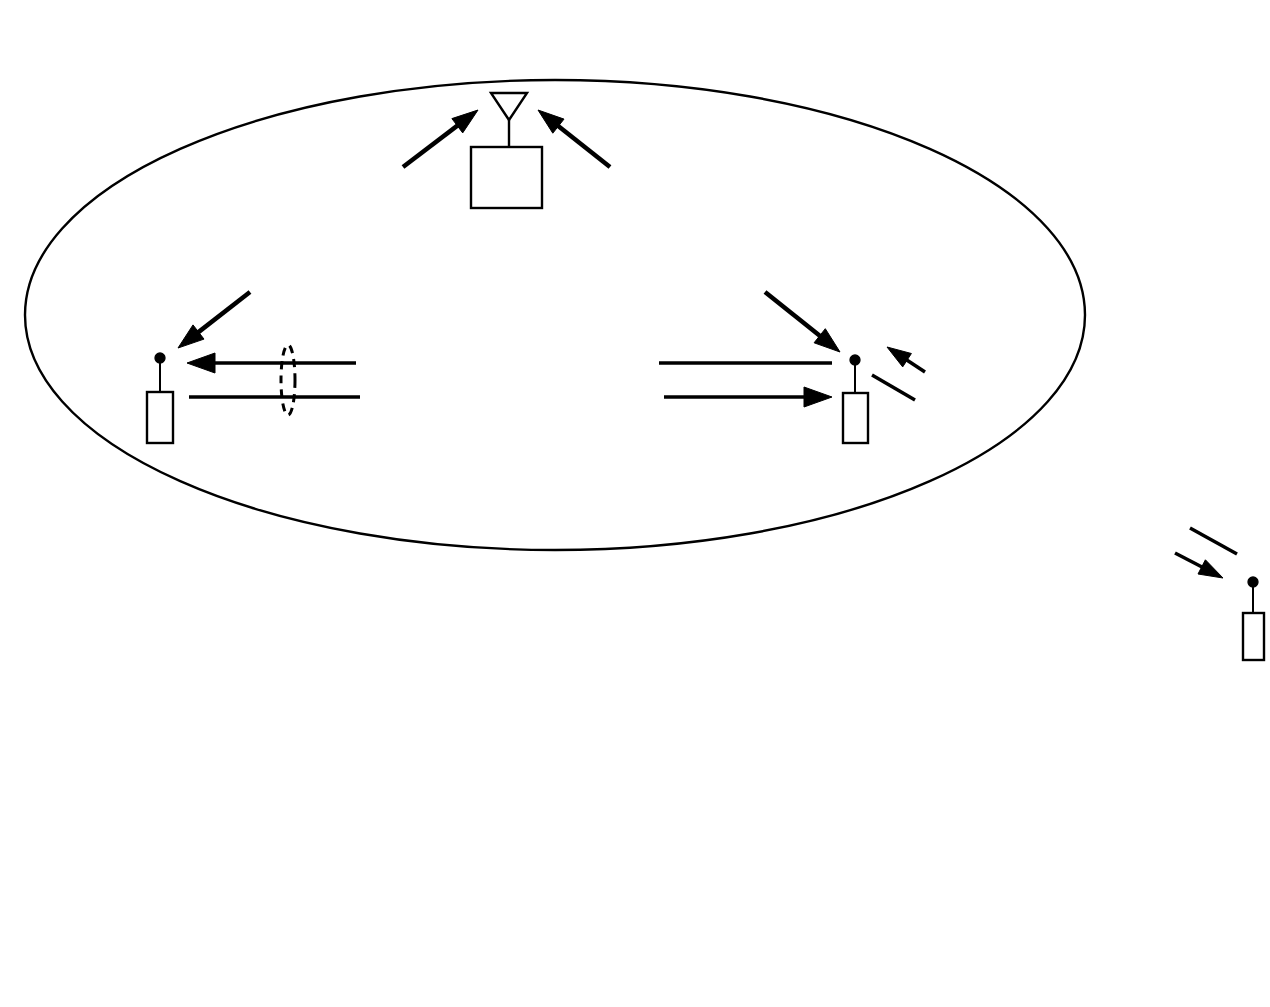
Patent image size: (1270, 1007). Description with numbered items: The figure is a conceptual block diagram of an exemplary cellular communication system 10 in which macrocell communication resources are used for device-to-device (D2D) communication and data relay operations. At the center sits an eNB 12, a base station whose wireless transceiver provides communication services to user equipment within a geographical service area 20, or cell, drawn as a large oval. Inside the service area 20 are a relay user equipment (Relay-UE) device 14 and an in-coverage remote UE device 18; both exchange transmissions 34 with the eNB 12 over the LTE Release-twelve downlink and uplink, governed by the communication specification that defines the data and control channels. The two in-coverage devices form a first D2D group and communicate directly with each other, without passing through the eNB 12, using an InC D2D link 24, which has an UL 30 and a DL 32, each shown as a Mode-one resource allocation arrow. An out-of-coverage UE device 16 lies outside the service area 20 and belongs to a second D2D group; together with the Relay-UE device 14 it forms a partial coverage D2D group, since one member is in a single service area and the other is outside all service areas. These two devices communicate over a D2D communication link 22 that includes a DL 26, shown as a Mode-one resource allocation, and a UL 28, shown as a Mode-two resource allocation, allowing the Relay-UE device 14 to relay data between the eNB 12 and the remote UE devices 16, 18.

The cellular communication system 10 is at (234, 88).
The eNB 12 is at (509, 208).
The relay user equipment (Relay-UE) device 14 is at (843, 443).
The out-of-coverage (OoC) UE device 16 is at (1243, 635).
The in-coverage (InC) remote UE device 18 is at (173, 443).
The geographical service area 20 is at (783, 102).
The D2D communication link 22 is at (1096, 410).
The InC D2D link 24 is at (293, 400).
The DL 26 is at (1185, 565).
The UL 28 is at (1203, 530).
The UL 30 is at (692, 397).
The DL 32 is at (722, 363).
The transmissions 34 is at (433, 138).